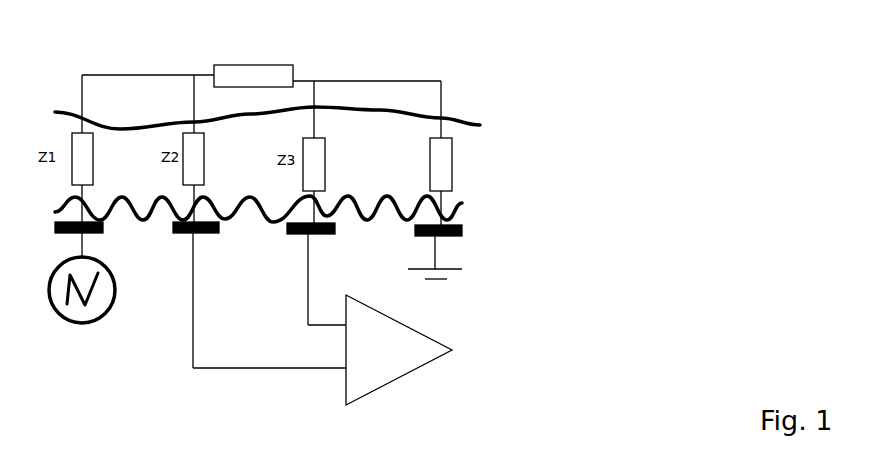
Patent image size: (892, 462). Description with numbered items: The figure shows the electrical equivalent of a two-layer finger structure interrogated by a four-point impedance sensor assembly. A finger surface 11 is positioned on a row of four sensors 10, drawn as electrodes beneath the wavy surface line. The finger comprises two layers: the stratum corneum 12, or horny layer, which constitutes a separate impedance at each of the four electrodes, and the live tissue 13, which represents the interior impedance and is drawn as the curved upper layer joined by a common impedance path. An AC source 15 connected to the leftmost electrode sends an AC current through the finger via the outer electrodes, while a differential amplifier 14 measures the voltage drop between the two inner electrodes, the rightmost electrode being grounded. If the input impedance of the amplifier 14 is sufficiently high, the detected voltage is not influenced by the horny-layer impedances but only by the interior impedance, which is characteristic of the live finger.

The sensors 10 is at (467, 240).
The finger surface 11 is at (473, 207).
The stratum corneum 12 is at (468, 164).
The live tissue 13 is at (464, 83).
The differential amplifier 14 is at (322, 319).
The AC source 15 is at (82, 294).